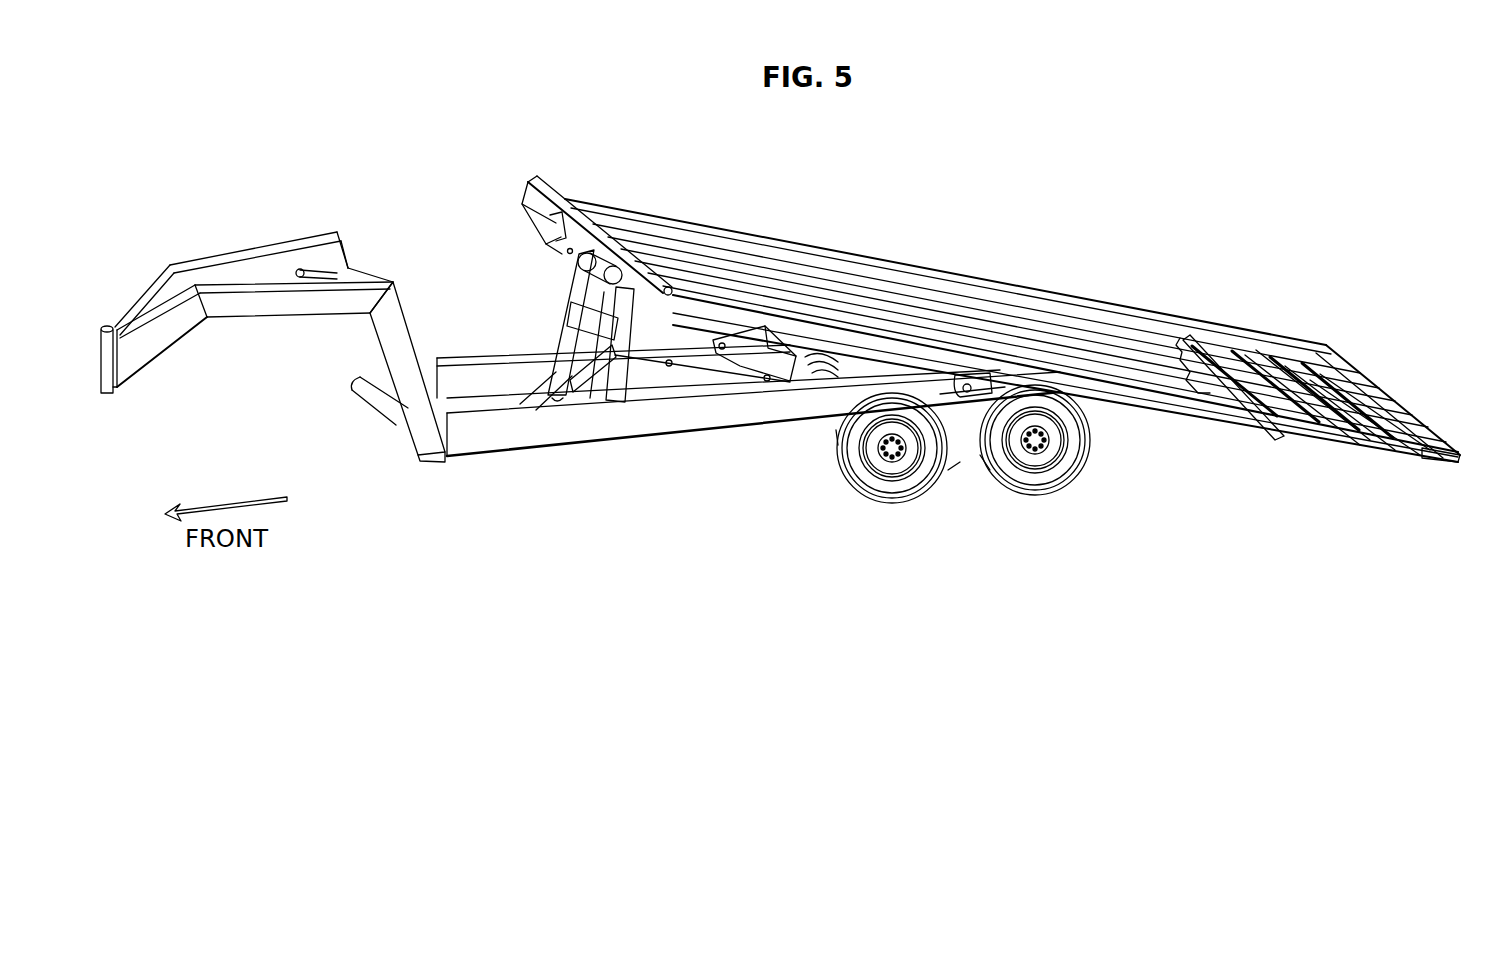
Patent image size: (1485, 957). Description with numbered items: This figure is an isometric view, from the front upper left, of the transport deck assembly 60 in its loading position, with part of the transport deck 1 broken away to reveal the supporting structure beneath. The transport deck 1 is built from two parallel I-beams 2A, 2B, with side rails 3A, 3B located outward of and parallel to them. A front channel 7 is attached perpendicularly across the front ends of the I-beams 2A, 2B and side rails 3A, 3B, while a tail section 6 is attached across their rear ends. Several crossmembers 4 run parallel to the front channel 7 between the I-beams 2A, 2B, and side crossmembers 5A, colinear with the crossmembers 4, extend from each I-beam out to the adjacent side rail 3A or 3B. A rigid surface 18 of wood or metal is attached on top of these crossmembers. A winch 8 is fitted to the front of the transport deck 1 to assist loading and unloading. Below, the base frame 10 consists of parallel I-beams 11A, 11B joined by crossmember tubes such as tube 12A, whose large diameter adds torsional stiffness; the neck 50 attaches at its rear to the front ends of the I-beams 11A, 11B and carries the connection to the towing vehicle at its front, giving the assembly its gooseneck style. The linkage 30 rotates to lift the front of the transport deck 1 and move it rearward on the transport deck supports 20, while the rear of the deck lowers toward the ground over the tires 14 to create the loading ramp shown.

The transport deck 1 is at (876, 240).
The rigid surface 18 is at (1068, 312).
The front channel 7 is at (530, 181).
The winch 8 is at (583, 266).
The linkage 30 is at (548, 318).
The transport deck supports 20 is at (965, 402).
The tires 14 is at (1060, 492).
The base frame 10 is at (741, 435).
The I-beam 11A is at (672, 442).
The I-beam 11B is at (487, 356).
The crossmember tube 12A is at (381, 418).
The neck 50 is at (240, 224).
The transport deck assembly 60 is at (433, 176).
The tail section 6 is at (1360, 375).
The side rail 3B is at (1215, 330).
The side crossmembers 5A is at (1258, 337).
The I-beam 2B is at (1316, 354).
The crossmembers 4 is at (1338, 402).
The I-beam 2A is at (1400, 420).
The side rail 3A is at (1368, 455).